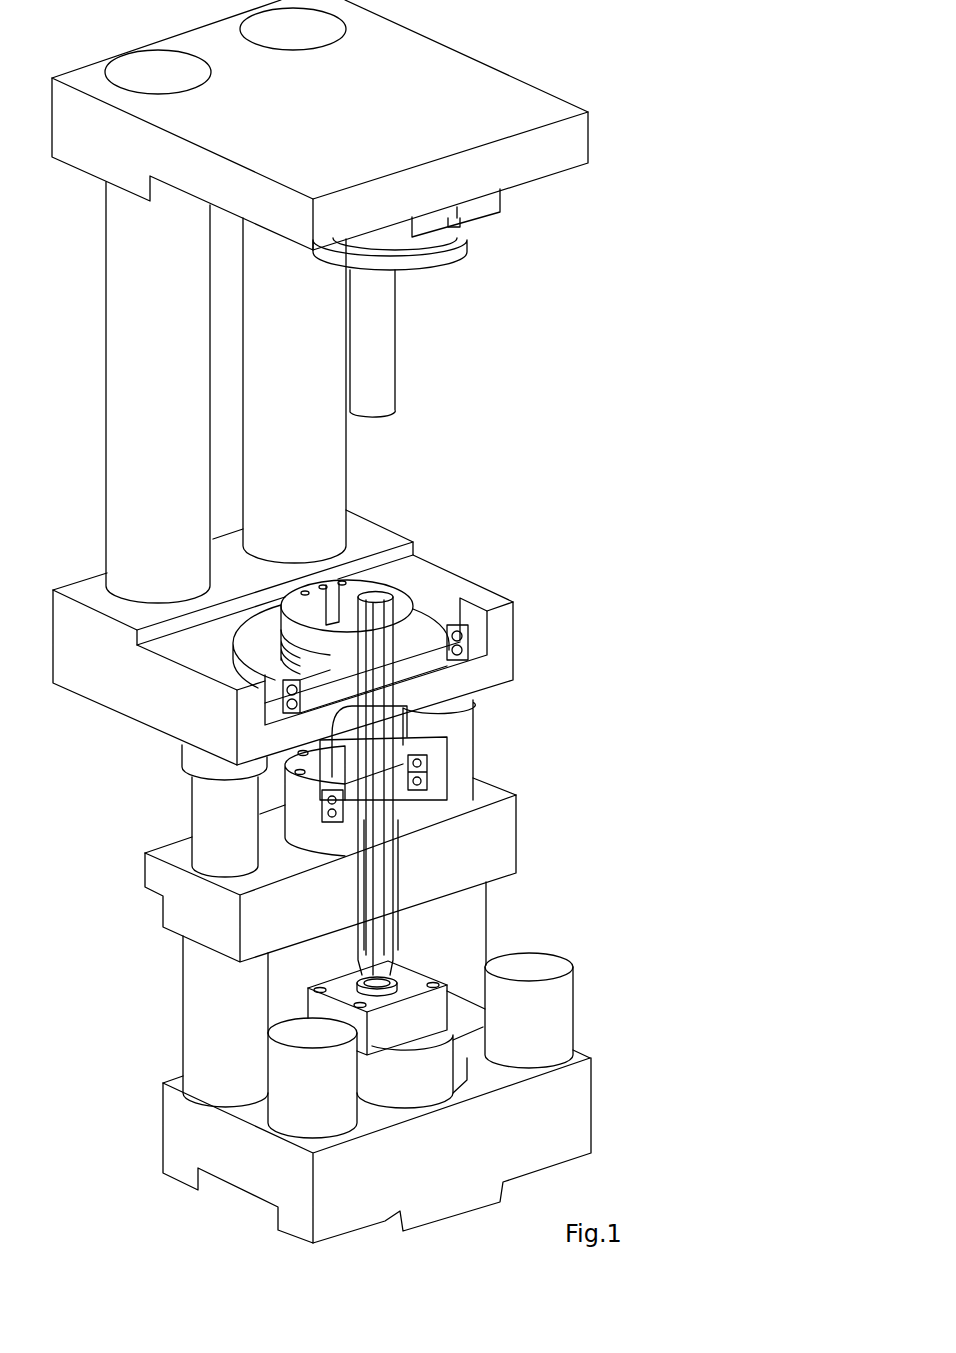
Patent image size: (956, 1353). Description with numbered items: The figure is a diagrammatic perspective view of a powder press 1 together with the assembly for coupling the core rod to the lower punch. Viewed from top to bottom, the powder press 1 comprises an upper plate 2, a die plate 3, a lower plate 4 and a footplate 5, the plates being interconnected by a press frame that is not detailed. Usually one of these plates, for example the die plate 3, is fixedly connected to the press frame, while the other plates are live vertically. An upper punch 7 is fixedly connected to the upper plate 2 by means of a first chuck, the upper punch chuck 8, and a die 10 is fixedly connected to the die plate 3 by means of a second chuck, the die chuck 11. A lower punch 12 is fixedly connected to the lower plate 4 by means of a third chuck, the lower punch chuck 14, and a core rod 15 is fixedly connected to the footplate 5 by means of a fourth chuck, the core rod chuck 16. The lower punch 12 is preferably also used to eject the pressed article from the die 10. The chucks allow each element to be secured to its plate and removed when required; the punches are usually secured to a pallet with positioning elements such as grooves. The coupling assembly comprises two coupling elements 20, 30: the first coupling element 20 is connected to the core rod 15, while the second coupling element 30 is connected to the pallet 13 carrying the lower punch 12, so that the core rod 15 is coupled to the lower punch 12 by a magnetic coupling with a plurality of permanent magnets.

The powder press 1 is at (650, 249).
The upper plate 2 is at (579, 150).
The die plate 3 is at (508, 633).
The lower plate 4 is at (512, 827).
The footplate 5 is at (578, 1122).
The upper punch 7 is at (410, 349).
The upper punch chuck 8 is at (502, 236).
The die 10 is at (442, 595).
The die chuck 11 is at (498, 647).
The lower punch 12 is at (399, 718).
The pallet 13 is at (400, 747).
The lower punch chuck 14 is at (466, 757).
The core rod 15 is at (378, 857).
The core rod chuck 16 is at (408, 978).
The first coupling element 20 is at (388, 884).
The second coupling element 30 is at (371, 823).